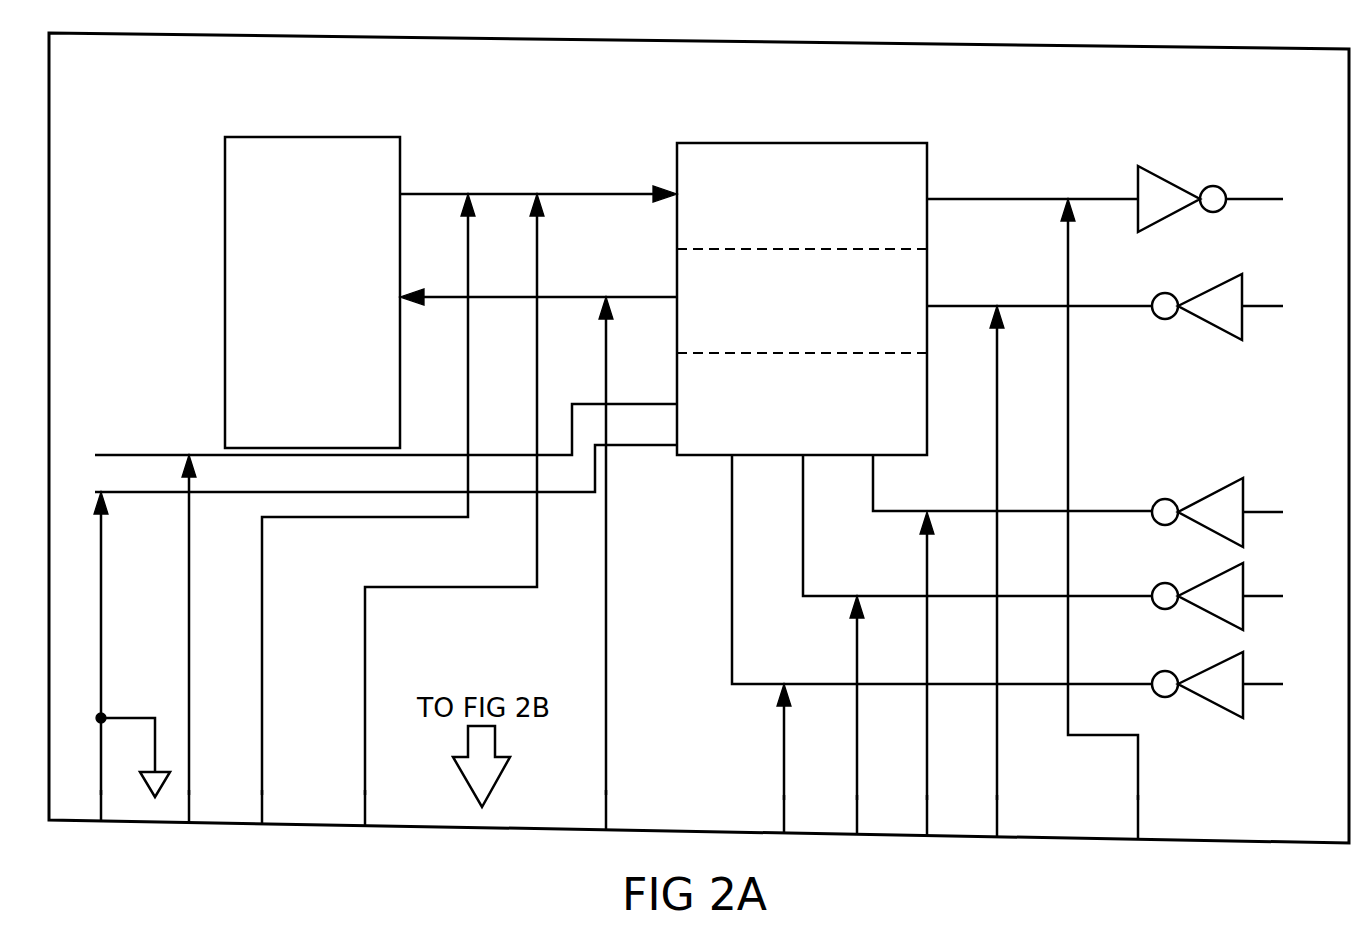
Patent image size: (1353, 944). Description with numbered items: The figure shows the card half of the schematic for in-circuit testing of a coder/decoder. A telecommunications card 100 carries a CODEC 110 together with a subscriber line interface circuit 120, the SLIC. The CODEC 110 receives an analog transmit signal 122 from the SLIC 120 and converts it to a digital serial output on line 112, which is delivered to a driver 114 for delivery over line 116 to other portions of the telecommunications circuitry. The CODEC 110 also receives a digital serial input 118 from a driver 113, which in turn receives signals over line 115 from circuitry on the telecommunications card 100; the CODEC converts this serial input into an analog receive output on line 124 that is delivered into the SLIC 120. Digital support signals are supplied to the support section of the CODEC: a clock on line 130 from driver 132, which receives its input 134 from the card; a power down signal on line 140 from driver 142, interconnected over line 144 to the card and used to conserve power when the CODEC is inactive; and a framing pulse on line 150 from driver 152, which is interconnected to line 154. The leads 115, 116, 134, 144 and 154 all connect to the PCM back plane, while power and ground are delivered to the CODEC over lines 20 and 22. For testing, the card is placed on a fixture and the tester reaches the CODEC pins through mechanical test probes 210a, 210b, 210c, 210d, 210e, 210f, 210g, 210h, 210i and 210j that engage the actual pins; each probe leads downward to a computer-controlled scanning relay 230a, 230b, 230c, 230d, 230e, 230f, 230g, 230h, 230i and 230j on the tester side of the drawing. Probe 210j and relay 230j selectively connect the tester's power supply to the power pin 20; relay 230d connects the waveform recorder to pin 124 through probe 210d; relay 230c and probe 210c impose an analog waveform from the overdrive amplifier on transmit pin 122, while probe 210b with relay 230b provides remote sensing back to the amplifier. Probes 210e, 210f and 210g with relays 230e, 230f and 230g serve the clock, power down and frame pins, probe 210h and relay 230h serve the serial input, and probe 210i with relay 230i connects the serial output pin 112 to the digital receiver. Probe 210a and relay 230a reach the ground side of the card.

The telecommunications card 100 is at (49, 148).
The CODEC 110 is at (793, 143).
The digital serial output line 112 is at (940, 199).
The driver 113 is at (1222, 278).
The driver 114 is at (1143, 165).
The line 115 is at (1250, 306).
The line 116 is at (1240, 199).
The digital serial input line 118 is at (1085, 306).
The subscriber line interface circuit (SLIC) 120 is at (400, 147).
The analog transmit signal line 122 is at (520, 194).
The analog receive output line 124 is at (548, 297).
The clock line 130 is at (732, 663).
The driver 132 is at (1228, 655).
The input line 134 is at (1250, 684).
The power down signal line 140 is at (803, 578).
The driver 142 is at (1228, 568).
The line 144 is at (1250, 596).
The framing pulse line 150 is at (880, 505).
The driver 152 is at (1228, 485).
The line 154 is at (1250, 512).
The power line 20 is at (160, 442).
The ground line 22 is at (284, 492).
The test probe 210a is at (101, 692).
The test probe 210b is at (262, 580).
The test probe 210c is at (365, 652).
The test probe 210d is at (606, 662).
The test probe 210e is at (784, 724).
The test probe 210f is at (857, 750).
The test probe 210g is at (927, 762).
The test probe 210h is at (997, 782).
The test probe 210i is at (1068, 442).
The test probe 210j is at (189, 583).
The scanning relay 230a is at (101, 825).
The scanning relay 230b is at (262, 828).
The scanning relay 230c is at (363, 829).
The scanning relay 230d is at (609, 831).
The scanning relay 230e is at (786, 834).
The scanning relay 230f is at (856, 836).
The scanning relay 230g is at (930, 834).
The scanning relay 230h is at (1000, 837).
The scanning relay 230i is at (1140, 835).
The scanning relay 230j is at (182, 825).